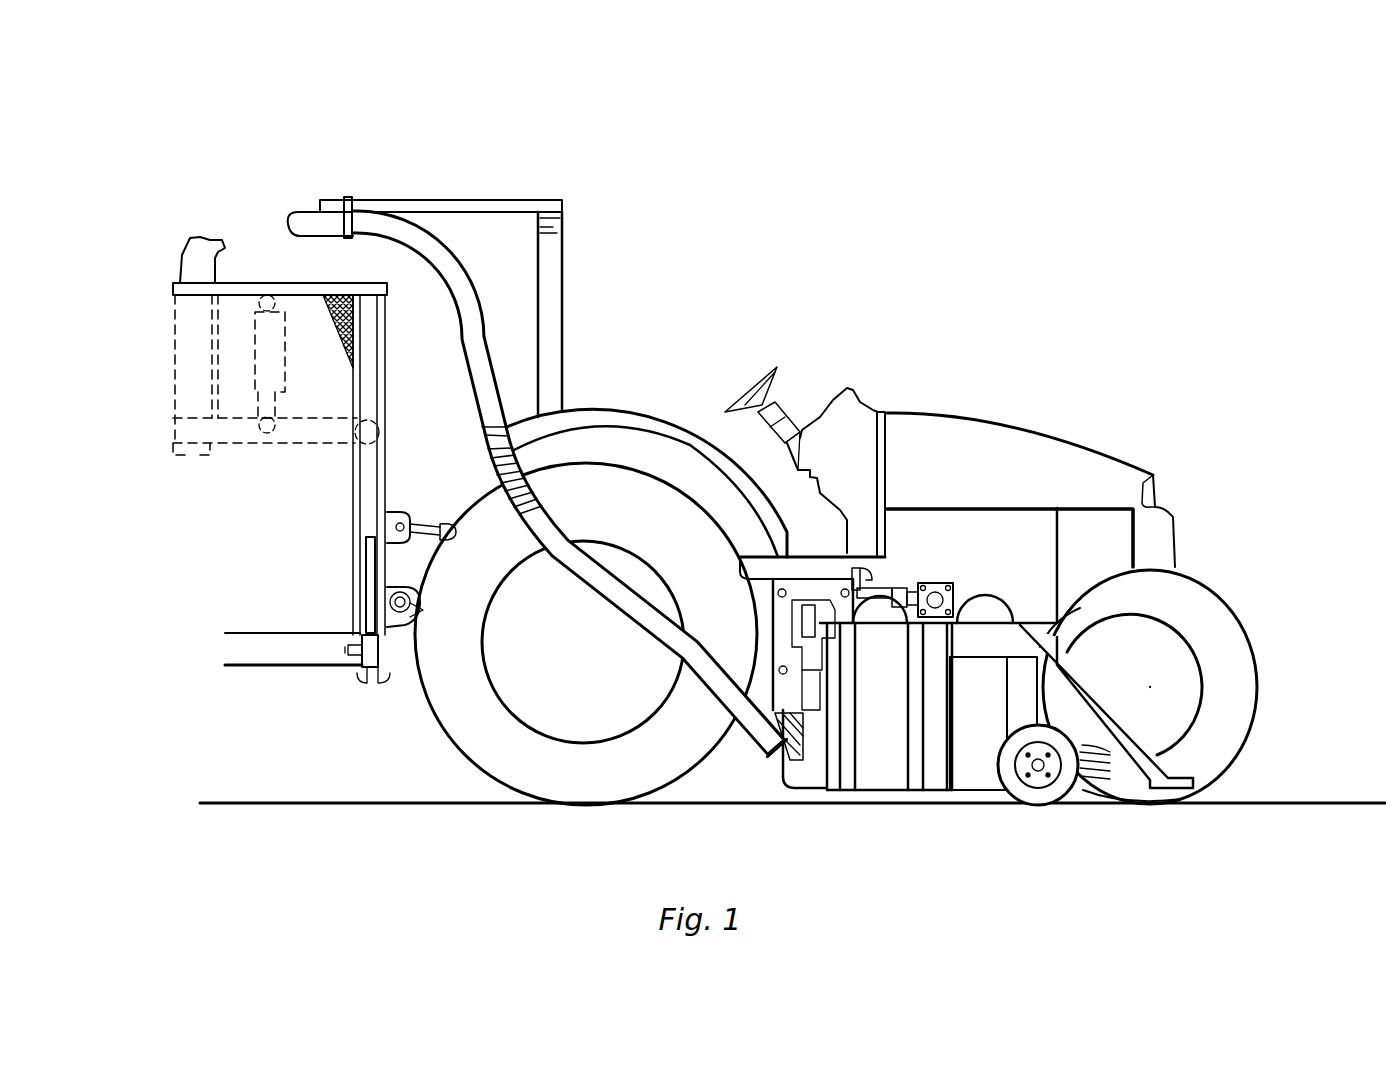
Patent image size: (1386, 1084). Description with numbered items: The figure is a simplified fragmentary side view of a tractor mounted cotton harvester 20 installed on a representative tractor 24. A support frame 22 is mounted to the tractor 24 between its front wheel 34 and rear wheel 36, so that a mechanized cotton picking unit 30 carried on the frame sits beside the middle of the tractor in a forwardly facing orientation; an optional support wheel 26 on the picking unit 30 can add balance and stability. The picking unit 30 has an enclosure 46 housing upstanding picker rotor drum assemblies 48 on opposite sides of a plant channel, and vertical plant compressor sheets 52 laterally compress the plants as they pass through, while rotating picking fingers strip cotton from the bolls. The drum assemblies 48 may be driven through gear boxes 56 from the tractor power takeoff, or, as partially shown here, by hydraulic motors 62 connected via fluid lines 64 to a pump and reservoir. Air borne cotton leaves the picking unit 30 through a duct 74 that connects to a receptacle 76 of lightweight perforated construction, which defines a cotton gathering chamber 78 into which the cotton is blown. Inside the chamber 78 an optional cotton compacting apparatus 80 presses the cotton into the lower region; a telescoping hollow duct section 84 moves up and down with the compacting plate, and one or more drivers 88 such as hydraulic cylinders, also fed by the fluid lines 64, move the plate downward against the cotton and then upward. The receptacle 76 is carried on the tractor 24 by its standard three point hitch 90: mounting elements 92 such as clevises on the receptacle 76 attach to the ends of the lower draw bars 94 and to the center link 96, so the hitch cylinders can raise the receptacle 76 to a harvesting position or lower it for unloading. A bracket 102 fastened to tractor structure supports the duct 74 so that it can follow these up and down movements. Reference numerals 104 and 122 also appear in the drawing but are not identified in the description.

The tractor mounted cotton harvester 20 is at (1167, 657).
The support frame 22 is at (757, 578).
The tractor 24 is at (1083, 440).
The support wheel 26 is at (1007, 797).
The cotton picking unit 30 is at (900, 797).
The front wheel 34 is at (1262, 727).
The rear wheel 36 is at (470, 767).
The enclosure 46 is at (1050, 632).
The picker rotor drum assembly 48 is at (878, 600).
The vertical plant compressor sheet 52 is at (1108, 712).
The gear box 56 is at (947, 583).
The hydraulic motor 62 is at (887, 593).
The fluid line 64 is at (862, 568).
The duct 74 is at (617, 562).
The receptacle 76 is at (240, 667).
The cotton gathering chamber 78 is at (300, 621).
The cotton compacting apparatus 80 is at (258, 453).
The telescoping hollow duct section 84 is at (220, 313).
The driver 88 is at (285, 388).
The three point hitch 90 is at (428, 520).
The mounting element 92 is at (387, 620).
The lower draw bar 94 is at (413, 613).
The center link 96 is at (437, 502).
The bracket 102 is at (350, 197).
The support post 104 is at (565, 250).
The mounting post 122 is at (793, 628).